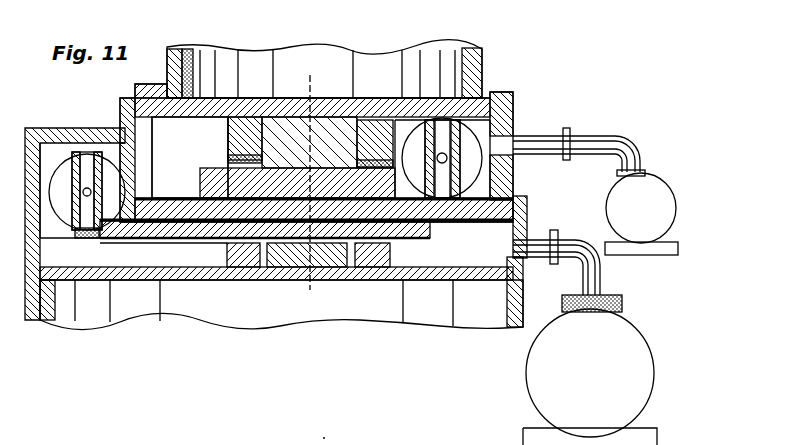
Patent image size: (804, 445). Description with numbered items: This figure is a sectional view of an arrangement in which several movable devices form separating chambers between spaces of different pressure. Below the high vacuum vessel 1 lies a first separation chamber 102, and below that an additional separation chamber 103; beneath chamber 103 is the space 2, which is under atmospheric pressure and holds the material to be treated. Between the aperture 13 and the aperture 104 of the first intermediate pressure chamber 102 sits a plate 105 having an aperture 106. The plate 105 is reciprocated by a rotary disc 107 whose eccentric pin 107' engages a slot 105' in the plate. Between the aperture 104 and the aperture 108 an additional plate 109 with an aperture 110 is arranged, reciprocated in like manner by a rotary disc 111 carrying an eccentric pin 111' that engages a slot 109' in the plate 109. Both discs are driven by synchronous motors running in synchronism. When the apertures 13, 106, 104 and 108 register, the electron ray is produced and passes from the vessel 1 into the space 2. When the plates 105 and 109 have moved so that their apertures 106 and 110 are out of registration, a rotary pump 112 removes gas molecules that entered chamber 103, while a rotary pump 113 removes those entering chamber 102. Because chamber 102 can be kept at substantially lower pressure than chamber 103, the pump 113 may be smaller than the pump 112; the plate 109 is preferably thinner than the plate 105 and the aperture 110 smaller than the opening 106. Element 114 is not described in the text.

The high vacuum vessel 1 is at (346, 73).
The space 2 is at (365, 320).
The aperture 13 is at (312, 100).
The separation chamber 102 is at (497, 96).
The additional separation chamber 103 is at (493, 241).
The aperture 104 is at (322, 206).
The plate 105 is at (207, 157).
The slot 105' is at (398, 122).
The aperture 106 is at (306, 191).
The rotary disc 107 is at (475, 158).
The eccentric pin 107' is at (433, 133).
The aperture 108 is at (309, 270).
The additional plate 109 is at (287, 239).
The slot 109' is at (75, 212).
The aperture 110 is at (256, 271).
The rotary disc 111 is at (70, 247).
The eccentric pin 111' is at (163, 252).
The rotary pump 112 is at (620, 325).
The rotary pump 113 is at (625, 190).
The support 114 is at (339, 441).